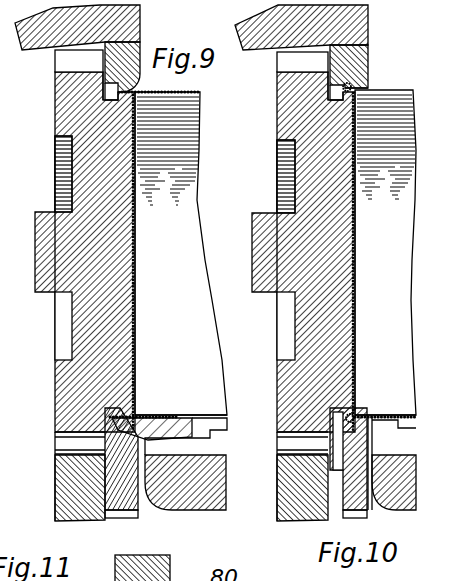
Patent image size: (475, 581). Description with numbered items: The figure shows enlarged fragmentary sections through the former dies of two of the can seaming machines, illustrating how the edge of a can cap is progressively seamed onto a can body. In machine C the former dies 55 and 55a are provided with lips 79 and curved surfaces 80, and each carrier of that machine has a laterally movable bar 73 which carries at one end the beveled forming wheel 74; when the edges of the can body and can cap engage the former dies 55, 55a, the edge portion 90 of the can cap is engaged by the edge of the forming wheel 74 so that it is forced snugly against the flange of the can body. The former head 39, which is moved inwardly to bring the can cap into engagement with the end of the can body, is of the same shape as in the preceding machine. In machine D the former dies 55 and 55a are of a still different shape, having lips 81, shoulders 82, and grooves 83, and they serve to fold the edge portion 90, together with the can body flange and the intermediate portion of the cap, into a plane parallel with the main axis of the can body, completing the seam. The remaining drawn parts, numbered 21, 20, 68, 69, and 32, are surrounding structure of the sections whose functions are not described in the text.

In FIG. 9, the former die 55 is at (140, 12).
In FIG. 10, the former die 55 is at (369, 16).
In FIG. 9, the former die 55a is at (135, 500).
In FIG. 10, the former die 55a is at (340, 495).
In FIG. 9, the tube 21 is at (196, 102).
In FIG. 10, the tube 21 is at (389, 241).
In FIG. 9, the tube wall 20 is at (136, 300).
In FIG. 10, the tube wall 20 is at (356, 234).
In FIG. 9, the former head 39 is at (133, 259).
In FIG. 10, the former head 39 is at (340, 269).
In FIG. 9, the lip 79 is at (125, 96).
In FIG. 9, the curved surface 80 is at (142, 85).
In FIG. 10, the lip 81 is at (335, 93).
In FIG. 10, the shoulder 82 is at (358, 91).
In FIG. 10, the groove 83 is at (349, 86).
In FIG. 9, the shoulder 68 is at (125, 408).
In FIG. 10, the shoulder 68 is at (335, 409).
In FIG. 9, the flange 69 is at (128, 407).
In FIG. 10, the flange 69 is at (350, 417).
In FIG. 9, the beveled forming wheel 74 is at (172, 419).
In FIG. 9, the laterally movable bar 73 is at (193, 426).
In FIG. 9, the edge portion 90 is at (72, 446).
In FIG. 10, the edge portion 90 is at (295, 443).
In FIG. 9, the base body 32 is at (60, 496).
In FIG. 10, the base body 32 is at (282, 494).